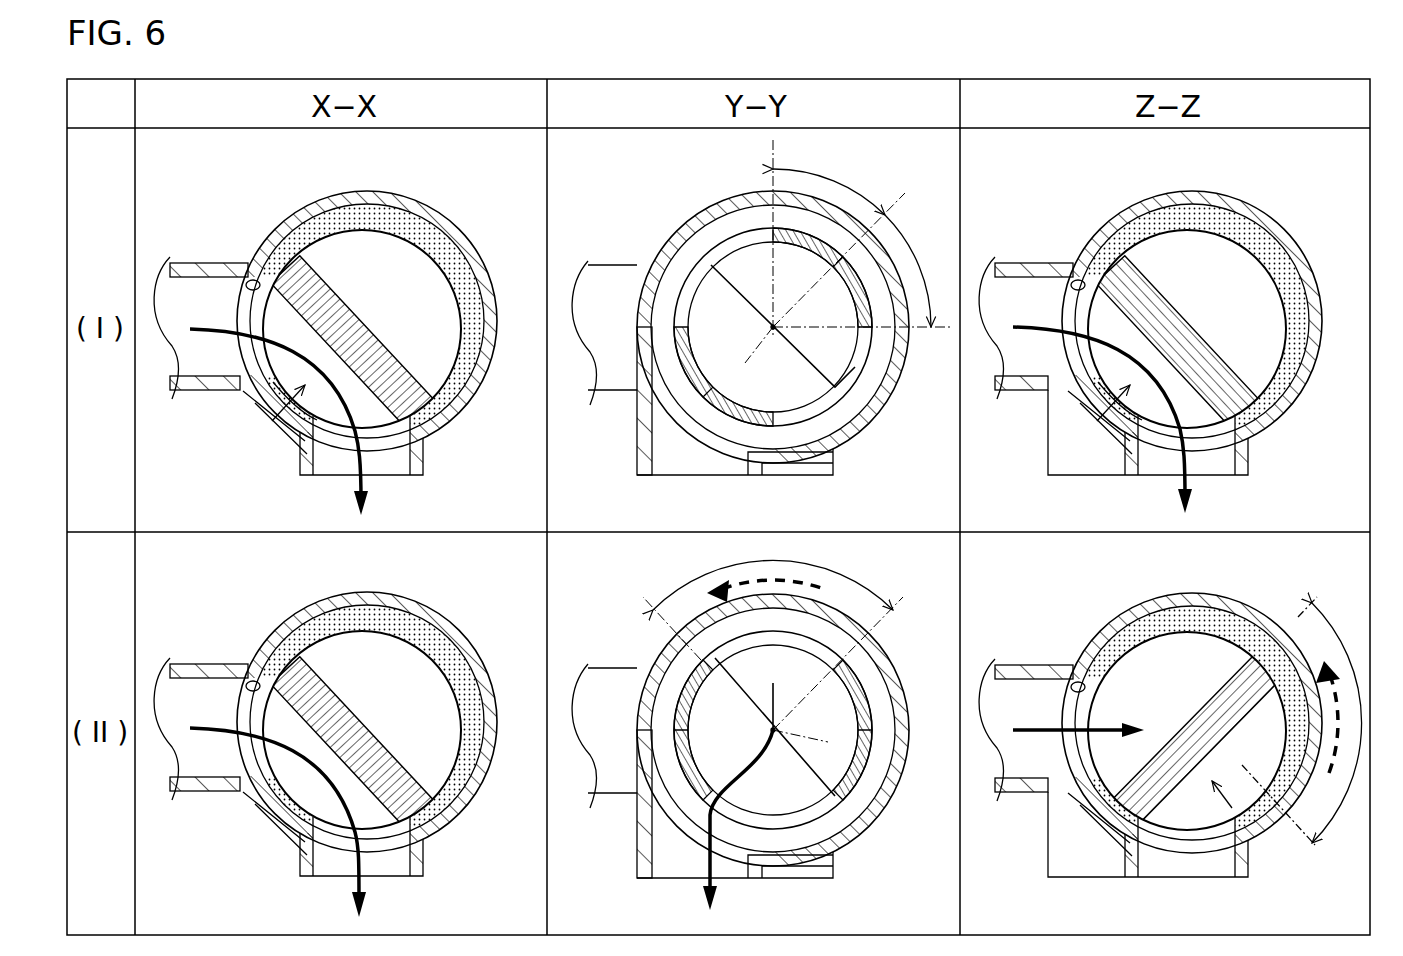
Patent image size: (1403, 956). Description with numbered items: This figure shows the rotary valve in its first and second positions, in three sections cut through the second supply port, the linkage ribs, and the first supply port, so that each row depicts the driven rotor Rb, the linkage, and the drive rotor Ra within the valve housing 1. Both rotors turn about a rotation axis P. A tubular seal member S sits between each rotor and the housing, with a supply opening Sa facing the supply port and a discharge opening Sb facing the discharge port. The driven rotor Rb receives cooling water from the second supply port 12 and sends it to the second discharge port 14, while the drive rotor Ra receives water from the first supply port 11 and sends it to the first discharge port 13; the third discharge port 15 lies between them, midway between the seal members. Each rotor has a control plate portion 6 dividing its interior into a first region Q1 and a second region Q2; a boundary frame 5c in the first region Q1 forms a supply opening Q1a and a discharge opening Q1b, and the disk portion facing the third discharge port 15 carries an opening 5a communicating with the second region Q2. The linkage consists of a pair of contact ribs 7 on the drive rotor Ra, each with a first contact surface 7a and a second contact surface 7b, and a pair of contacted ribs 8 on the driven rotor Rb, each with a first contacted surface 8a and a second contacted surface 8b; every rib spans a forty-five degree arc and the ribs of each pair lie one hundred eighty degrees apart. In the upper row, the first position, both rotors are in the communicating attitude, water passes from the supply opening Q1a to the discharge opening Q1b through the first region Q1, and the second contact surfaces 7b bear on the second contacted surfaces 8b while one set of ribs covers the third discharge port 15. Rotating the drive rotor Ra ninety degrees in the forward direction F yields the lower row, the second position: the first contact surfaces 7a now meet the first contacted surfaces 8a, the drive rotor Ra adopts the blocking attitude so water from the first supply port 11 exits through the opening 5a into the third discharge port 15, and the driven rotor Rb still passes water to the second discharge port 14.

The valve housing 1 is at (779, 502).
The opening 5a is at (935, 484).
The boundary frame 5c is at (757, 581).
The control plate portion 6 is at (780, 553).
The contact ribs 7 is at (766, 481).
The first contact surface 7a is at (729, 456).
The second contact surface 7b is at (778, 558).
The contacted ribs 8 is at (761, 579).
The first contacted surface 8a is at (765, 533).
The second contacted surface 8b is at (770, 523).
The first supply port 11 is at (1027, 493).
The second supply port 12 is at (193, 484).
The first discharge port 13 is at (1196, 656).
The second discharge port 14 is at (303, 667).
The third discharge port 15 is at (701, 589).
The seal member S is at (794, 509).
The supply opening Sa is at (646, 451).
The discharge opening Sb is at (816, 684).
The drive rotor Ra is at (1097, 651).
The driven rotor Rb is at (645, 553).
The first region Q1 is at (776, 608).
The supply opening Q1a is at (663, 606).
The discharge opening Q1b is at (826, 525).
The second region Q2 is at (811, 406).
The rotation axis P is at (789, 566).
The forward direction F is at (1035, 651).